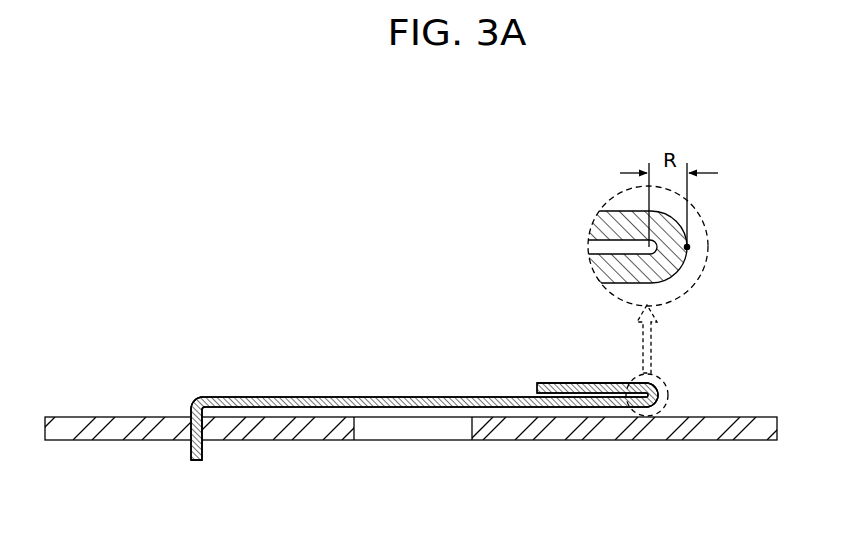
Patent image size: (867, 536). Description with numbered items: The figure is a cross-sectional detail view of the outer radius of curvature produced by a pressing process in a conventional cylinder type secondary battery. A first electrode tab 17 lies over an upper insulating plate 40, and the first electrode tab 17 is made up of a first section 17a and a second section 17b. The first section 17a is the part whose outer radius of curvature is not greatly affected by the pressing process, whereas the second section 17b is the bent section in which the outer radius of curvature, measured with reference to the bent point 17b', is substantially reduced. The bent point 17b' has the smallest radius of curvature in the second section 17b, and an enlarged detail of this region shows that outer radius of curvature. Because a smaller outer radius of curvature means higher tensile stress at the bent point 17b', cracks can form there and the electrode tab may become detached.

The first electrode tab 17 is at (432, 392).
The first section 17a is at (189, 397).
The second section 17b is at (626, 366).
The bent point 17b' is at (676, 301).
The upper insulating plate 40 is at (325, 437).